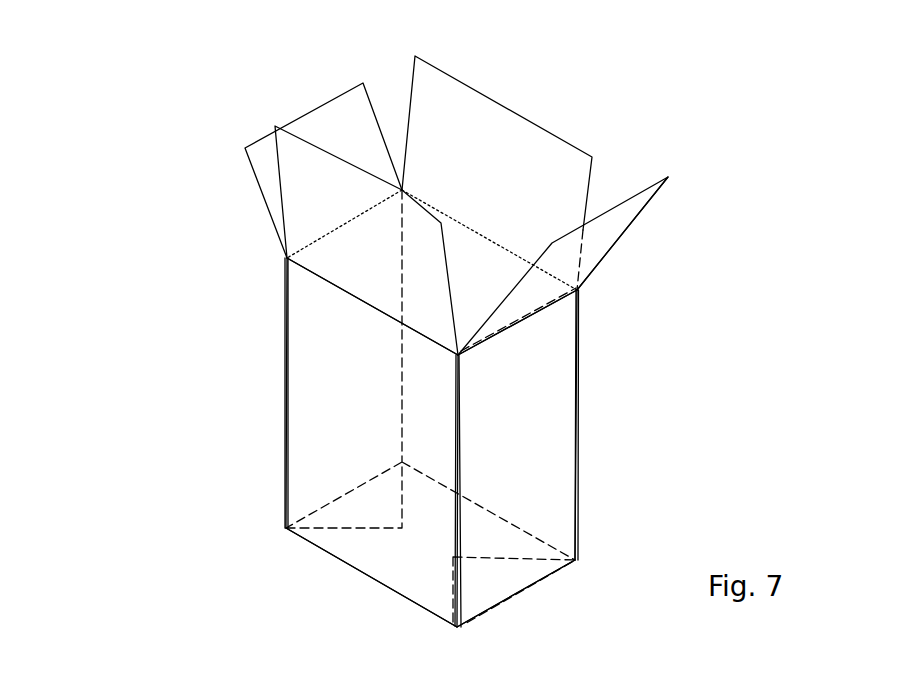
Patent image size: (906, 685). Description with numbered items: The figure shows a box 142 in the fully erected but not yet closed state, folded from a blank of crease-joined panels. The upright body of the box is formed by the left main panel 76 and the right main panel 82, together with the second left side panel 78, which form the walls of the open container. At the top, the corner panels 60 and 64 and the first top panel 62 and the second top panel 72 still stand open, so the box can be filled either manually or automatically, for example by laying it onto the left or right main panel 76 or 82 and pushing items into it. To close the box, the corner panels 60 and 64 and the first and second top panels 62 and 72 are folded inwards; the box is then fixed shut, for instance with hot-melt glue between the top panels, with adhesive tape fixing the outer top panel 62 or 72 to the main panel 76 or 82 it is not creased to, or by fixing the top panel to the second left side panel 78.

The box 142 is at (192, 190).
The corner panel 60 is at (323, 120).
The first top panel 62 is at (503, 173).
The corner panel 64 is at (608, 232).
The second top panel 72 is at (303, 203).
The left main panel 76 is at (490, 270).
The second left side panel 78 is at (535, 426).
The right main panel 82 is at (303, 323).